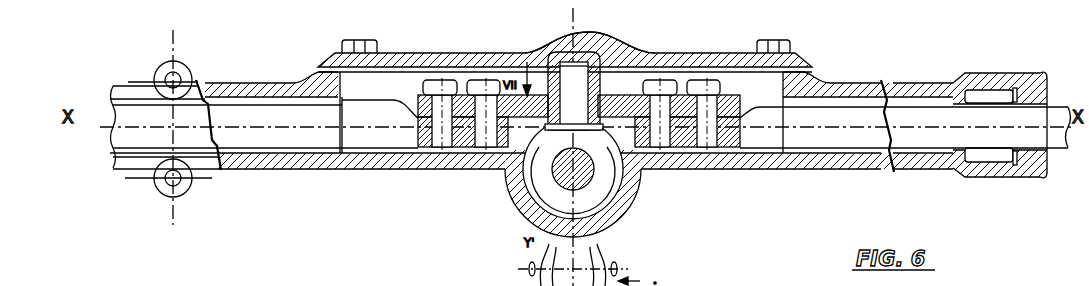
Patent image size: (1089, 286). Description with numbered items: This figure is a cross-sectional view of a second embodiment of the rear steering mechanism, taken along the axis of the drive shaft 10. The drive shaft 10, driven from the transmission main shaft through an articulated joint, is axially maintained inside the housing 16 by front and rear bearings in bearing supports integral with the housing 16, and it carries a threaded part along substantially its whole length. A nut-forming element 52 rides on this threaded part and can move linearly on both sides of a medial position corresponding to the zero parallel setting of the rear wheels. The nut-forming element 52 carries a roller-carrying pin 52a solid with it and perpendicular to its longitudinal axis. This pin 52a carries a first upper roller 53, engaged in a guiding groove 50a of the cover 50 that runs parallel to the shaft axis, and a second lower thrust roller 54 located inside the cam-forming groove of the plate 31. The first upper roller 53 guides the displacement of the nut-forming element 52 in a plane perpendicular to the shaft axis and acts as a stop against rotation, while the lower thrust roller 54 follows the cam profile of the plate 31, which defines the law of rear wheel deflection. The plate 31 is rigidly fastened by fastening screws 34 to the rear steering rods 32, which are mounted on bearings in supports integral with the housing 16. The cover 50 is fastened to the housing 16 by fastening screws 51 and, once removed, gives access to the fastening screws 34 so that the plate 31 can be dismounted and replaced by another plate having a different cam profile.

The drive shaft 10 is at (620, 193).
The housing 16 is at (252, 166).
The plate 31 is at (503, 170).
The rear steering rods 32 is at (363, 133).
The fastening screws 34 is at (420, 88).
The cover 50 is at (399, 55).
The guiding groove 50a is at (571, 53).
The fastening screws 51 is at (343, 55).
The nut-forming element 52 is at (518, 209).
The roller-carrying pin 52a is at (598, 127).
The first upper roller 53 is at (489, 55).
The second lower thrust roller 54 is at (583, 184).